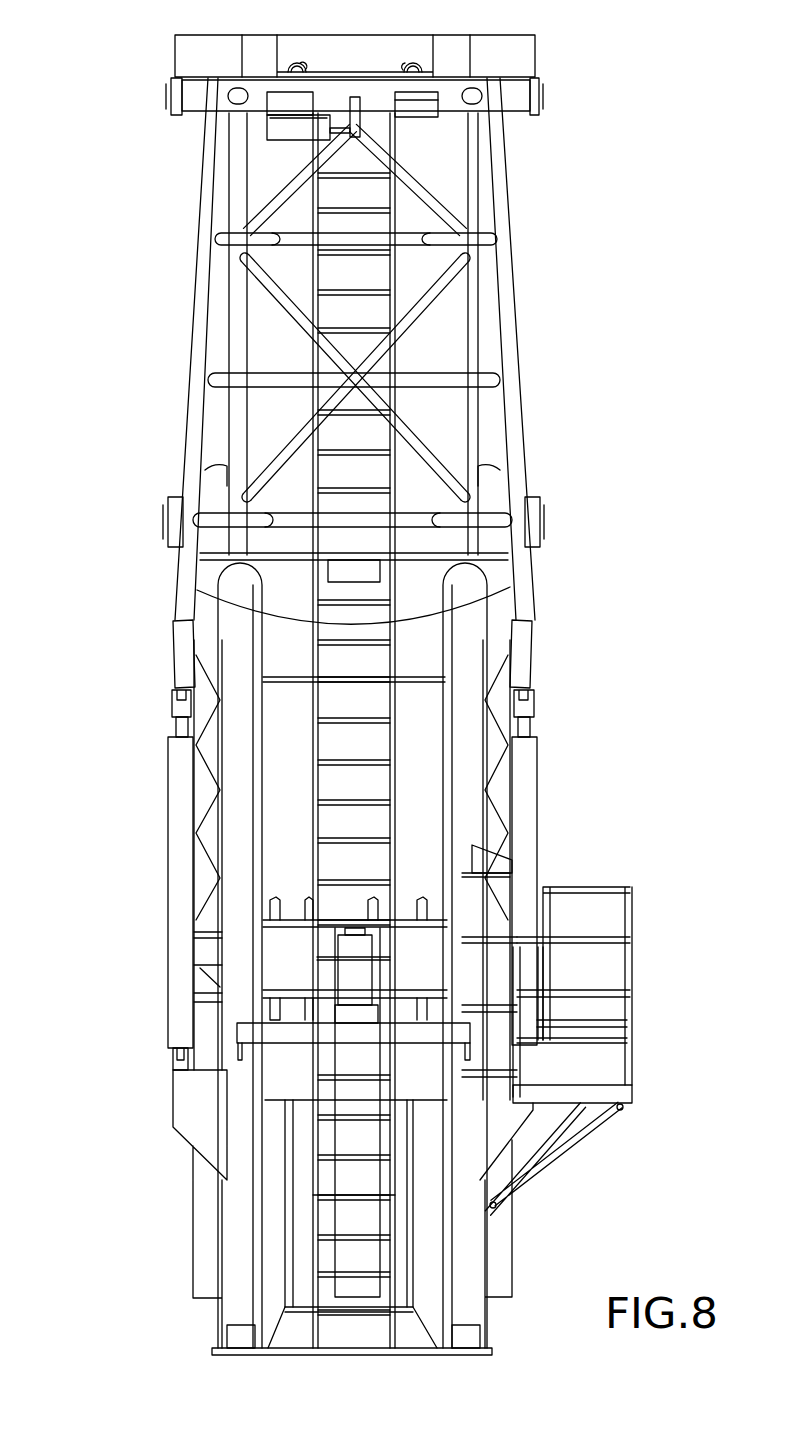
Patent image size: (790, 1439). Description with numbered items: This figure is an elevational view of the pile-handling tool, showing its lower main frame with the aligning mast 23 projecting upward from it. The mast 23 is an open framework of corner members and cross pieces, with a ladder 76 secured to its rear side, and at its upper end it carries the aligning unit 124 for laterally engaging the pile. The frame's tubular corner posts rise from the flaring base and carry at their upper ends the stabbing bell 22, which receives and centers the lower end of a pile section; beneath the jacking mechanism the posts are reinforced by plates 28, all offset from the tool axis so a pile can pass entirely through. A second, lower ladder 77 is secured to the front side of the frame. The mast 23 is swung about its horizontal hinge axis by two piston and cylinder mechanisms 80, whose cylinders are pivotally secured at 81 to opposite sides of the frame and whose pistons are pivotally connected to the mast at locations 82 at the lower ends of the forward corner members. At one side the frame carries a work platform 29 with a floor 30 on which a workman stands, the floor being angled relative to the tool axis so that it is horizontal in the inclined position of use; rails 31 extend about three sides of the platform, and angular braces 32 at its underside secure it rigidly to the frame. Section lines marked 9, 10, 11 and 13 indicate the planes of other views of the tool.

The aligning unit 124 is at (548, 80).
The aligning mast 23 is at (518, 407).
The ladder 76 is at (393, 403).
The stabbing bell 22 is at (197, 590).
The pivotal connection locations 82 is at (173, 705).
The piston and cylinder mechanisms 80 is at (173, 918).
The pivotal securing points 81 is at (173, 1062).
The plates 28 is at (287, 1075).
The second lower ladder 77 is at (315, 1197).
The work platform 29 is at (585, 988).
The rails 31 is at (633, 925).
The floor 30 is at (612, 1072).
The angular braces 32 is at (568, 1150).
The section line 9- 9 is at (115, 20).
The section line 10- 10 is at (150, 873).
The section line 11- 11 is at (158, 1027).
The section line 13- 13 is at (350, 868).